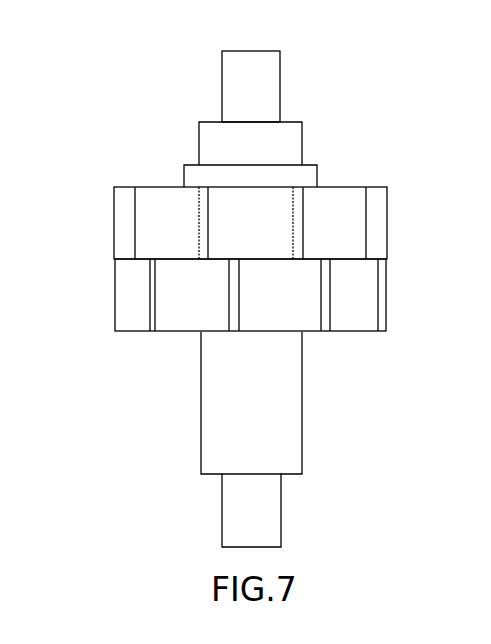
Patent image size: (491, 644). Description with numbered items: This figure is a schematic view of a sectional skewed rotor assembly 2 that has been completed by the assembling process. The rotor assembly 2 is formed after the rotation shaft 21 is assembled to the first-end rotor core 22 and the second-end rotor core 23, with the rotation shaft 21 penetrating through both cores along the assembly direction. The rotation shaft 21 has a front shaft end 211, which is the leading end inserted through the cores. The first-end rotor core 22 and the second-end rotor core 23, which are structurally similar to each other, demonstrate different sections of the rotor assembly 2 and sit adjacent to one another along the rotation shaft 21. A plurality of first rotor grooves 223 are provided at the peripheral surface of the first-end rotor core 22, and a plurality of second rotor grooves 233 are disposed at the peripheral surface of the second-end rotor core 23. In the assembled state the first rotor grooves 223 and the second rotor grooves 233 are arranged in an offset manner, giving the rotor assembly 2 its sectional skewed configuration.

The sectional skewed rotor assembly 2 is at (431, 91).
The rotation shaft 21 is at (272, 86).
The front shaft end 211 is at (274, 515).
The first-end rotor core 22 is at (343, 195).
The first rotor grooves 223 is at (205, 220).
The second-end rotor core 23 is at (365, 299).
The second rotor grooves 233 is at (235, 297).